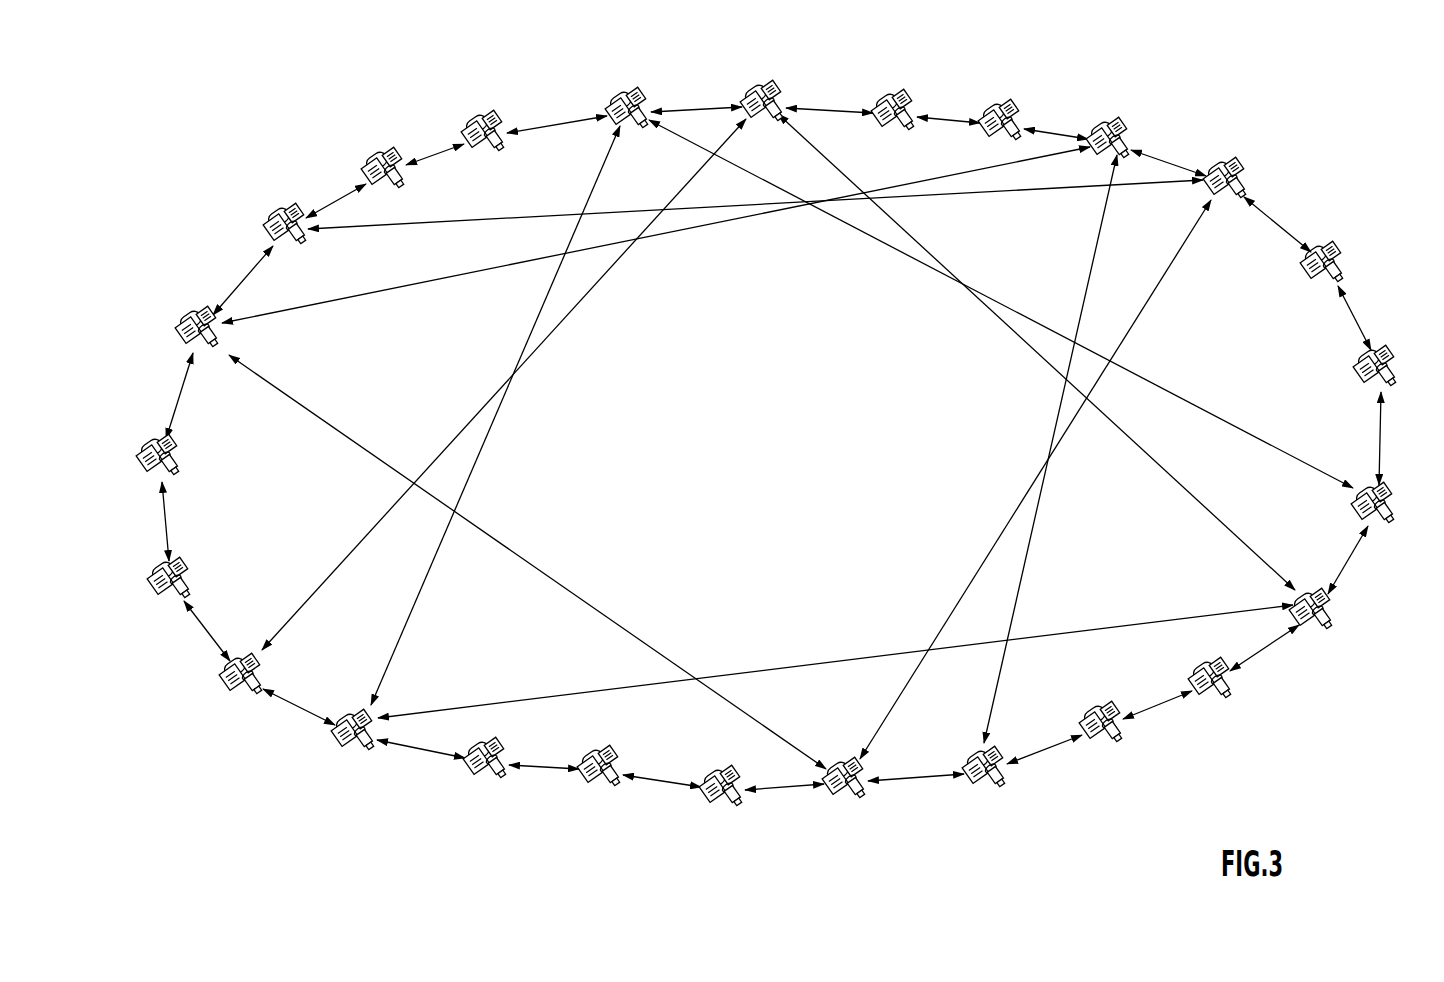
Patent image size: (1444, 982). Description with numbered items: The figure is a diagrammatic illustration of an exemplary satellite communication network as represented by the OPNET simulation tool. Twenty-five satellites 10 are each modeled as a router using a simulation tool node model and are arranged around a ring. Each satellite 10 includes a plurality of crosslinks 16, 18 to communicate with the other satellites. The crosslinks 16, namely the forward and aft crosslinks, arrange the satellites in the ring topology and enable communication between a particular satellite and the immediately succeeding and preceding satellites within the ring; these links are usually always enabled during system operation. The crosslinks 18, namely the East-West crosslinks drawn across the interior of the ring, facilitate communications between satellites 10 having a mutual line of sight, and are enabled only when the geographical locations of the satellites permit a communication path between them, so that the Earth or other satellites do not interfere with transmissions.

The satellite 10 is at (1122, 738).
The crosslink 16 is at (1047, 745).
The crosslink 18 is at (1175, 482).